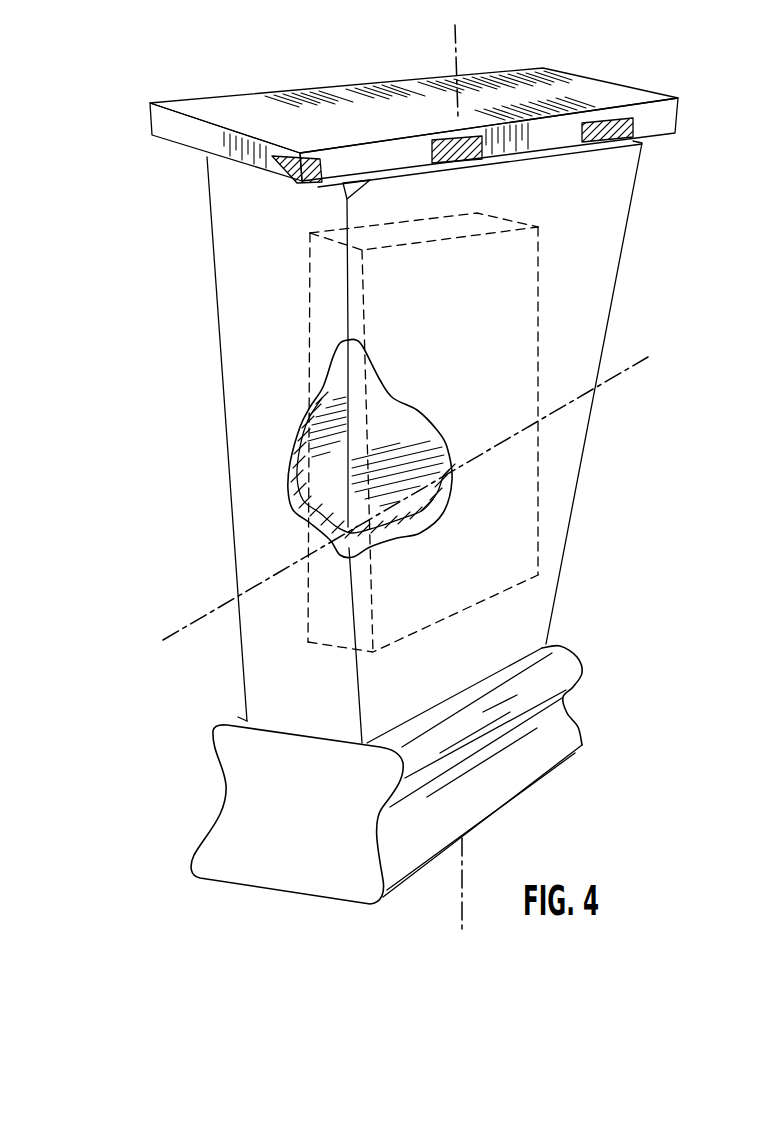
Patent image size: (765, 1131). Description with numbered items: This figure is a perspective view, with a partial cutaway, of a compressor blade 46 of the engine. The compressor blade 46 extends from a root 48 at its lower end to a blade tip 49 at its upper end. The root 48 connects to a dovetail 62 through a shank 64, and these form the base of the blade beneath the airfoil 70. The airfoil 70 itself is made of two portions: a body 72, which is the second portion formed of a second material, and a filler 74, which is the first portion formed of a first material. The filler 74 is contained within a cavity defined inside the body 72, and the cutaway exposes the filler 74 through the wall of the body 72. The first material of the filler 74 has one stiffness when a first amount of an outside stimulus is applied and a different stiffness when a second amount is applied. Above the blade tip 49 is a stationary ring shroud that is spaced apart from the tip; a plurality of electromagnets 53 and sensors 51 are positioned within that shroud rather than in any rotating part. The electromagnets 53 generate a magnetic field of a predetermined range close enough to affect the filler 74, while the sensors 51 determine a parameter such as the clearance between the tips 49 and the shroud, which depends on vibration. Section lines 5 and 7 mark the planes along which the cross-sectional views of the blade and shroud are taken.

The section line 5- 5 is at (441, 25).
The section line 7- 7 is at (658, 367).
The compressor blade 46 is at (121, 568).
The root 48 is at (213, 732).
The blade tip 49 is at (372, 180).
The sensor 51 is at (472, 138).
The electromagnet 53 is at (613, 126).
The dovetail 62 is at (507, 792).
The shank 64 is at (500, 749).
The airfoil 70 is at (160, 318).
The body 72 is at (258, 358).
The filler 74 is at (340, 467).